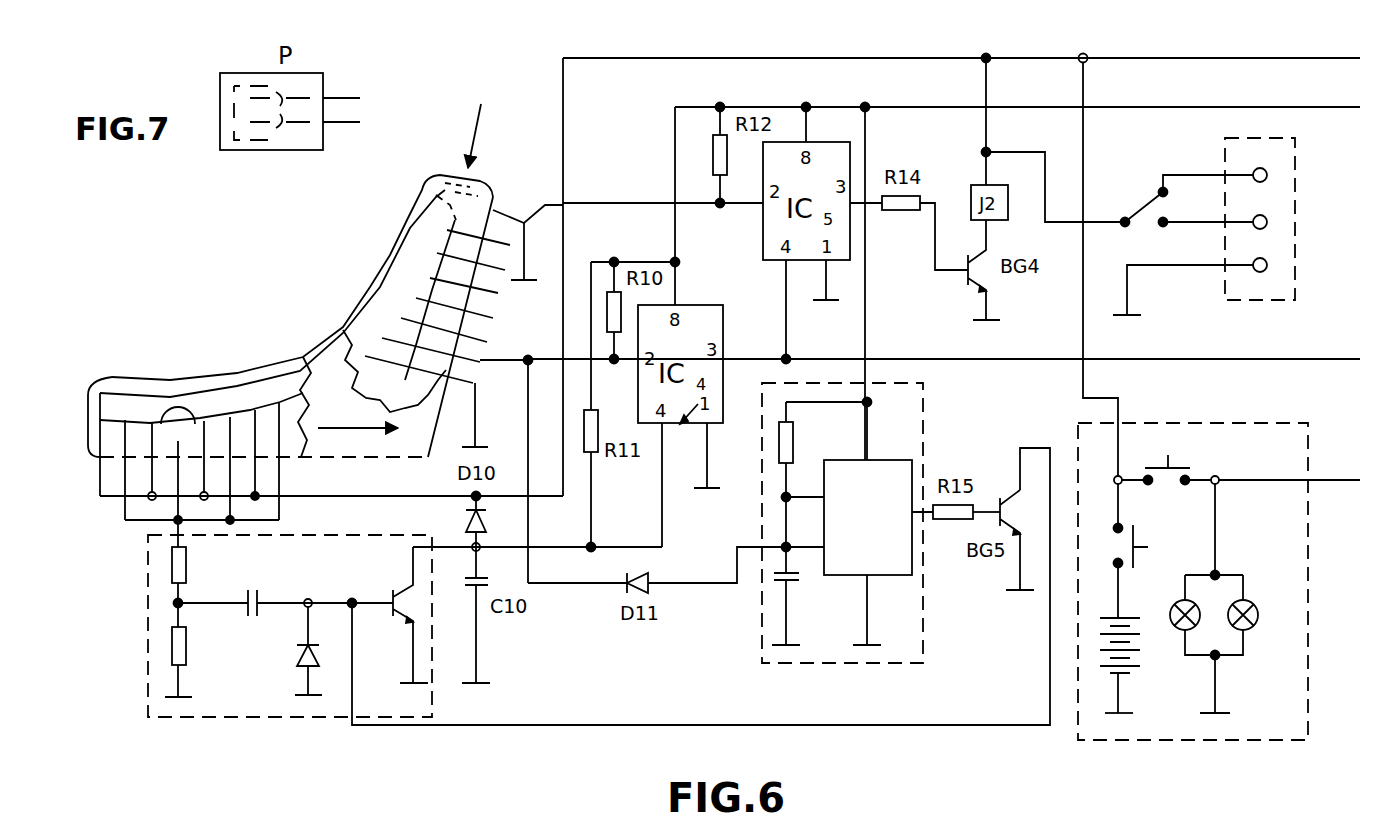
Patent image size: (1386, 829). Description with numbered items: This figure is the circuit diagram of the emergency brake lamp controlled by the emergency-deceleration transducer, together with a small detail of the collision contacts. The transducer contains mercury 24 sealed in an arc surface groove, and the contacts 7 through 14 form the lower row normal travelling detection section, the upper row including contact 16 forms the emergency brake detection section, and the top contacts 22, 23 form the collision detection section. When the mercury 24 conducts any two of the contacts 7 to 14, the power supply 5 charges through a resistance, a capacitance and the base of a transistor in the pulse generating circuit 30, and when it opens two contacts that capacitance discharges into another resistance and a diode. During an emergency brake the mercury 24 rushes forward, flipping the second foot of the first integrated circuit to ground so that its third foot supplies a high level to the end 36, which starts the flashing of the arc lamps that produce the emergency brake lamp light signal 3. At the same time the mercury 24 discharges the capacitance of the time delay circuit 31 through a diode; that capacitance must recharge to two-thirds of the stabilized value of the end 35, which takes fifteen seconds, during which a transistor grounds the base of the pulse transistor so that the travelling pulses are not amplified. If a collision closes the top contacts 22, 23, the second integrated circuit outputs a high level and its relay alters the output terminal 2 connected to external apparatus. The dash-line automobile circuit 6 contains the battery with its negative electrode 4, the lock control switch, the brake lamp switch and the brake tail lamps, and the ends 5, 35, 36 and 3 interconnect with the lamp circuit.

In FIG. 6, the output terminals 2 is at (1287, 240).
In FIG. 6, the emergency brake lamp light signal 3 is at (1289, 464).
In FIG. 6, the negative electrode 4 is at (1130, 705).
In FIG. 6, the positive electrode 5 is at (961, 41).
In FIG. 6, the automobile circuit 6 is at (1219, 581).
In FIG. 6, the contact 7 is at (89, 445).
In FIG. 6, the contact 14 is at (331, 483).
In FIG. 6, the contact 16 is at (506, 470).
In FIG. 7, the contact 22 is at (341, 136).
In FIG. 6, the contact 22 is at (534, 251).
In FIG. 7, the contact 23 is at (341, 85).
In FIG. 6, the contact 23 is at (528, 203).
In FIG. 6, the mercury 24 is at (172, 408).
In FIG. 6, the pulse generating circuit 30 is at (240, 705).
In FIG. 6, the time delay circuit 31 is at (912, 605).
In FIG. 6, the end 35 is at (1017, 91).
In FIG. 6, the end 36 is at (944, 341).